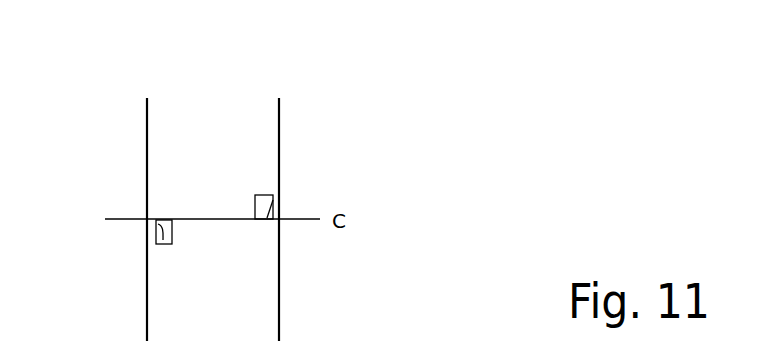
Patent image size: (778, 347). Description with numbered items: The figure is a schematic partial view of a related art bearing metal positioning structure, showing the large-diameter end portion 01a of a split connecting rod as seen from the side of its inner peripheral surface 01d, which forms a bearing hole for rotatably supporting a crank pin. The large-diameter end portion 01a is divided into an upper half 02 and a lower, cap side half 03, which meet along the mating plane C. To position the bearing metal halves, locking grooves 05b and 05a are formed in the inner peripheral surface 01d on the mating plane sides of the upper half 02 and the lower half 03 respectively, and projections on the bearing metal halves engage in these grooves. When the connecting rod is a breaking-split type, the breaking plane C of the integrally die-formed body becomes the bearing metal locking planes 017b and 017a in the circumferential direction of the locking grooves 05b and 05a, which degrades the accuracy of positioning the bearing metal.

The upper half of the large-diameter end portion 02 is at (160, 141).
The inner peripheral surface 01d is at (216, 100).
The large-diameter end portion 01a is at (328, 128).
The locking groove 05b is at (262, 195).
The bearing metal locking plane 017b is at (273, 200).
The locking groove 05a is at (166, 245).
The bearing metal locking plane 017a is at (158, 224).
The lower half of the large-diameter end portion 03 is at (258, 293).